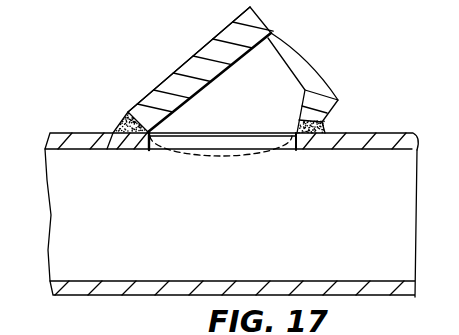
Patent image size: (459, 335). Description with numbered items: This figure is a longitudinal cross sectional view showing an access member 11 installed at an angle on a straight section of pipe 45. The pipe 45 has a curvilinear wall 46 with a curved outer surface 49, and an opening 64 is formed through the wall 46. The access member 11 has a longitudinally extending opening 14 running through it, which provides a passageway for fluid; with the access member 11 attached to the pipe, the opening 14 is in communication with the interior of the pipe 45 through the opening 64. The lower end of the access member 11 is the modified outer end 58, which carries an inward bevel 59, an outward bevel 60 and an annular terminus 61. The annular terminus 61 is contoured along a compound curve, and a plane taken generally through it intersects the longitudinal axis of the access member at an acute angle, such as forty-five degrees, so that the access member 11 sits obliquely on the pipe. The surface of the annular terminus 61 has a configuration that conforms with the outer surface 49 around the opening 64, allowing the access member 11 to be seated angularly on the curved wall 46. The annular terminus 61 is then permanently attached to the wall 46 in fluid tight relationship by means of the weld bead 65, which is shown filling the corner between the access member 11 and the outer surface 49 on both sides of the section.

The access member 11 is at (190, 78).
The longitudinally extending opening 14 is at (276, 36).
The pipe 45 is at (173, 296).
The wall 46 is at (83, 287).
The outer surface 49 is at (72, 132).
The outer end 58 is at (340, 104).
The inward bevel 59 is at (172, 77).
The outward bevel 60 is at (190, 98).
The annular terminus 61 is at (229, 131).
The opening 64 is at (151, 143).
The weld bead 65 is at (128, 112).